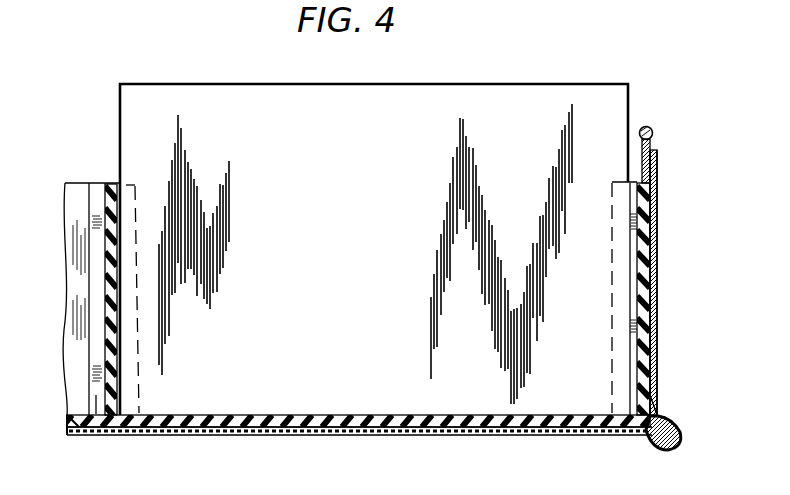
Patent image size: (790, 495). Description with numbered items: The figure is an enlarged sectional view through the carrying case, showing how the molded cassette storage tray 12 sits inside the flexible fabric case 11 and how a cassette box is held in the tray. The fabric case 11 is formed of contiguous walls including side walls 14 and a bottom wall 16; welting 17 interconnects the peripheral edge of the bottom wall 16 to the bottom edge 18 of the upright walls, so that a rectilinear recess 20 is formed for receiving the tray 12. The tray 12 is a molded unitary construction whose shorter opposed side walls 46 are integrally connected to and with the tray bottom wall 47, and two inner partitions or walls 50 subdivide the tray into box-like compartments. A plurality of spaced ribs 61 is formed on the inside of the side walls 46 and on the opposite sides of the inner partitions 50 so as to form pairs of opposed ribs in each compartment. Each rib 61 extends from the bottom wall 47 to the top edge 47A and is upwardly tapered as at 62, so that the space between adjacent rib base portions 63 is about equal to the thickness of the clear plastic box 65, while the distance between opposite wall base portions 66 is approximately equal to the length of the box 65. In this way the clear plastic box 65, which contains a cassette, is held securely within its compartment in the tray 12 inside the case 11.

The flexible fabric case 11 is at (658, 264).
The cassette storage tray 12 is at (643, 303).
The side walls 14 is at (657, 338).
The bottom wall 16 is at (218, 436).
The welting 17 is at (670, 447).
The bottom edge 18 is at (660, 417).
The rectilinear recess 20 is at (658, 393).
The shorter opposed side walls 46 is at (647, 194).
The bottom wall 47 is at (420, 415).
The top edge 47A is at (98, 183).
The inner partitions 50 is at (112, 370).
The spaced ribs 61 is at (95, 236).
The upward taper 62 is at (88, 303).
The rib base portions 63 is at (100, 428).
The clear plastic box 65 is at (617, 97).
The wall base portions 66 is at (95, 402).